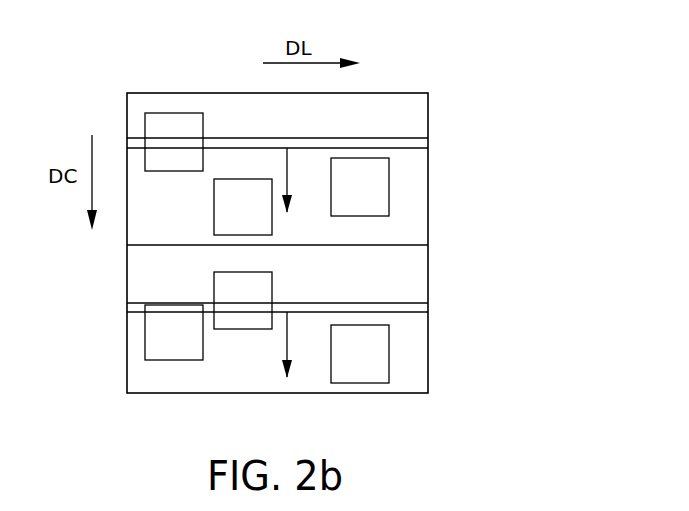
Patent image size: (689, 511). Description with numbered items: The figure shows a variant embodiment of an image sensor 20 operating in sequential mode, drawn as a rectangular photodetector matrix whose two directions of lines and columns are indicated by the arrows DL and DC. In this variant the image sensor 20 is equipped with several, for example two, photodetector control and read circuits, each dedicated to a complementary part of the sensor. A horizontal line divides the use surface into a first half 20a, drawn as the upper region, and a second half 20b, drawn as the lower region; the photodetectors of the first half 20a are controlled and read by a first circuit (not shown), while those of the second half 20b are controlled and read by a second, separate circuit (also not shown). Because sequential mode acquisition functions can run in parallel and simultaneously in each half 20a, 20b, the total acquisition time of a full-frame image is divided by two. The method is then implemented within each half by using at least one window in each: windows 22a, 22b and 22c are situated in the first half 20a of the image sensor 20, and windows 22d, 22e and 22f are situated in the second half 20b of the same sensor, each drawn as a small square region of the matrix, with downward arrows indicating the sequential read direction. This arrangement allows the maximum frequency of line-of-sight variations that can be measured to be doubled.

The image sensor 20 is at (522, 157).
The first half of the use surface 20a is at (428, 206).
The second half of the use surface 20b is at (428, 290).
The window 22a is at (168, 113).
The window 22b is at (366, 158).
The window 22c is at (240, 179).
The window 22d is at (240, 329).
The window 22e is at (145, 337).
The window 22f is at (365, 383).